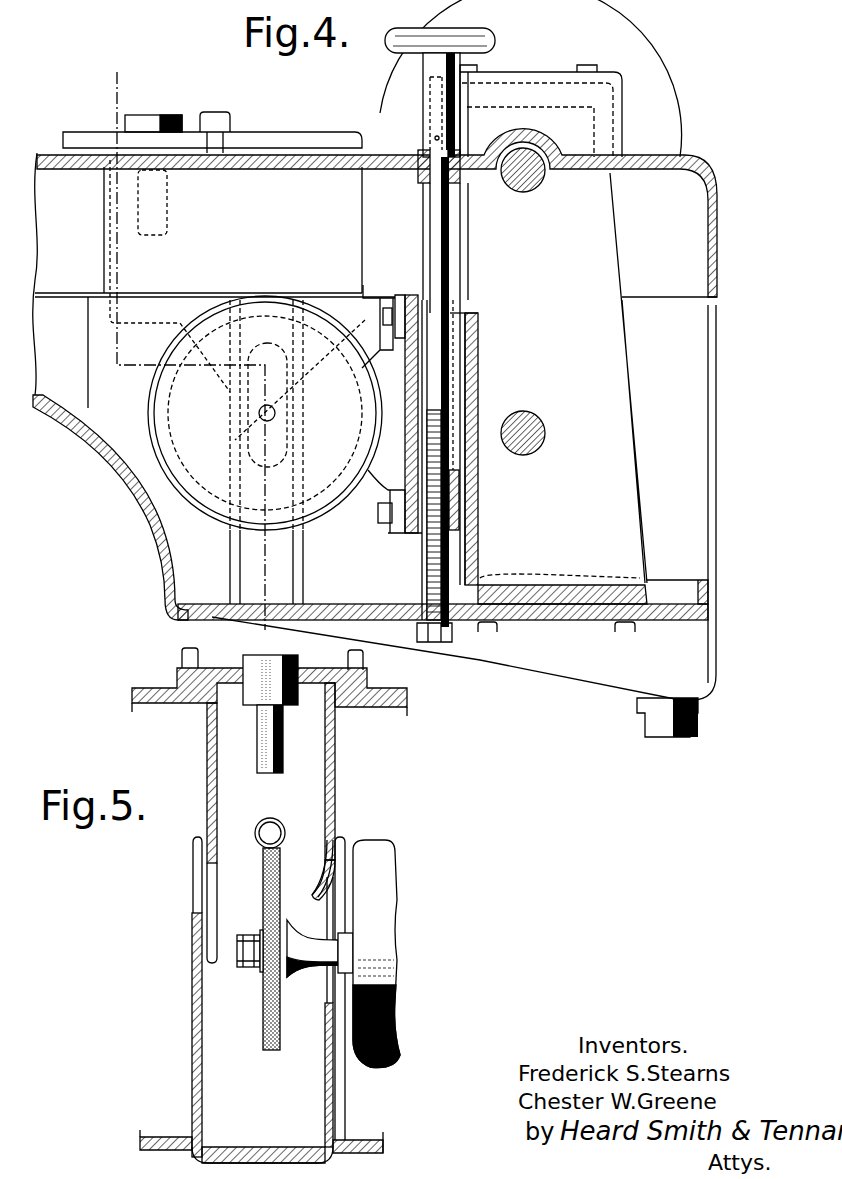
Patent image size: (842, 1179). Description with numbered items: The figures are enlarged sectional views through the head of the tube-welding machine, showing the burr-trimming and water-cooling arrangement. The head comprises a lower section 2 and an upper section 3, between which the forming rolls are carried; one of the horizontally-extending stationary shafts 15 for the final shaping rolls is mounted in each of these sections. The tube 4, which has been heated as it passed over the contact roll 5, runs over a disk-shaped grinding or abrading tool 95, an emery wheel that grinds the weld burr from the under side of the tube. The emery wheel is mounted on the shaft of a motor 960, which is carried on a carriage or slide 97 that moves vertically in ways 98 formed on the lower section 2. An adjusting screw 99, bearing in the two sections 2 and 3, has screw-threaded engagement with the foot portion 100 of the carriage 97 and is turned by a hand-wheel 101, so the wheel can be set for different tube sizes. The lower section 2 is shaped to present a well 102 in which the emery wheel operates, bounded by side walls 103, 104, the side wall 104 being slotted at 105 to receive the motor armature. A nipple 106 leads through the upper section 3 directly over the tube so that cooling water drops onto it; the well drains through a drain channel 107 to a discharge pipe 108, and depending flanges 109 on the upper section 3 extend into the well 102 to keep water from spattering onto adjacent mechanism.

In FIG. 4, the lower section of the head 2 is at (705, 600).
In FIG. 5, the lower section of the head 2 is at (358, 1143).
In FIG. 4, the upper section of the head 3 is at (713, 191).
In FIG. 5, the upper section of the head 3 is at (408, 702).
In FIG. 5, the tube 4 is at (285, 826).
In FIG. 4, the contact roll 5 is at (188, 350).
In FIG. 4, the horizontally-extending stationary shaft 15 is at (533, 190).
In FIG. 4, the grinding or abrading tool 95 is at (170, 455).
In FIG. 5, the grinding or abrading tool 95 is at (268, 871).
In FIG. 4, the motor 960 is at (183, 493).
In FIG. 5, the motor 960 is at (389, 915).
In FIG. 4, the carriage or slide 97 is at (408, 385).
In FIG. 4, the ways 98 is at (453, 401).
In FIG. 4, the adjusting screw 99 is at (446, 456).
In FIG. 4, the foot portion of the carriage 100 is at (457, 507).
In FIG. 4, the hand-wheel 101 is at (410, 32).
In FIG. 4, the well 102 is at (197, 573).
In FIG. 5, the well 102 is at (220, 1055).
In FIG. 5, the side wall of the well 103 is at (192, 985).
In FIG. 5, the side wall of the well 104 is at (336, 1085).
In FIG. 5, the slot 105 is at (330, 913).
In FIG. 4, the nipple 106 is at (167, 207).
In FIG. 5, the nipple 106 is at (266, 719).
In FIG. 4, the drain channel 107 is at (650, 661).
In FIG. 4, the discharge pipe 108 is at (692, 726).
In FIG. 5, the depending flanges 109 is at (207, 773).